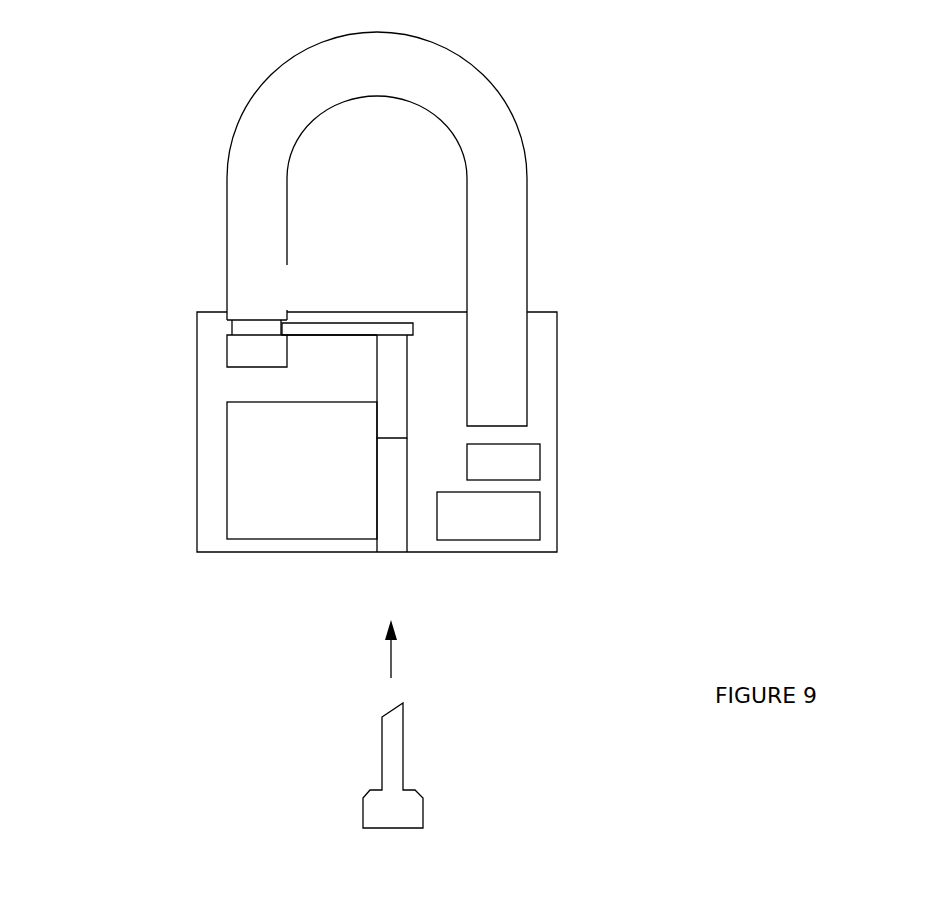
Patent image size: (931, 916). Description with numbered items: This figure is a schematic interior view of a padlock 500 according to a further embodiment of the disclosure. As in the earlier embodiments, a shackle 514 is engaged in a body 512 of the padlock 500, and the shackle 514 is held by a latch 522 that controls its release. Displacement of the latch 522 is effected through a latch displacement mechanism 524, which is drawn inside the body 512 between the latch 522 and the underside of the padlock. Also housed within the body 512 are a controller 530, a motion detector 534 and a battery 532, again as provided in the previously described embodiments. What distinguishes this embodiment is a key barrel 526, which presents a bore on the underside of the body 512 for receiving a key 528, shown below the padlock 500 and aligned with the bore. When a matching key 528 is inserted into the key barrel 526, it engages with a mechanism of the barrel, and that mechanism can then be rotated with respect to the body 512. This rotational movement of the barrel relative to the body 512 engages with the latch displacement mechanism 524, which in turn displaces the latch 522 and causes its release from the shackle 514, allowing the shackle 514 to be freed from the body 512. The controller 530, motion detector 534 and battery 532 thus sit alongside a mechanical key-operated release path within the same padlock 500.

The padlock 500 is at (86, 432).
The body 512 is at (222, 548).
The shackle 514 is at (251, 243).
The latch 522 is at (335, 330).
The latch displacement mechanism 524 is at (387, 412).
The key barrel 526 is at (389, 540).
The key 528 is at (393, 778).
The controller 530 is at (323, 540).
The battery 532 is at (487, 543).
The motion detector 534 is at (502, 475).